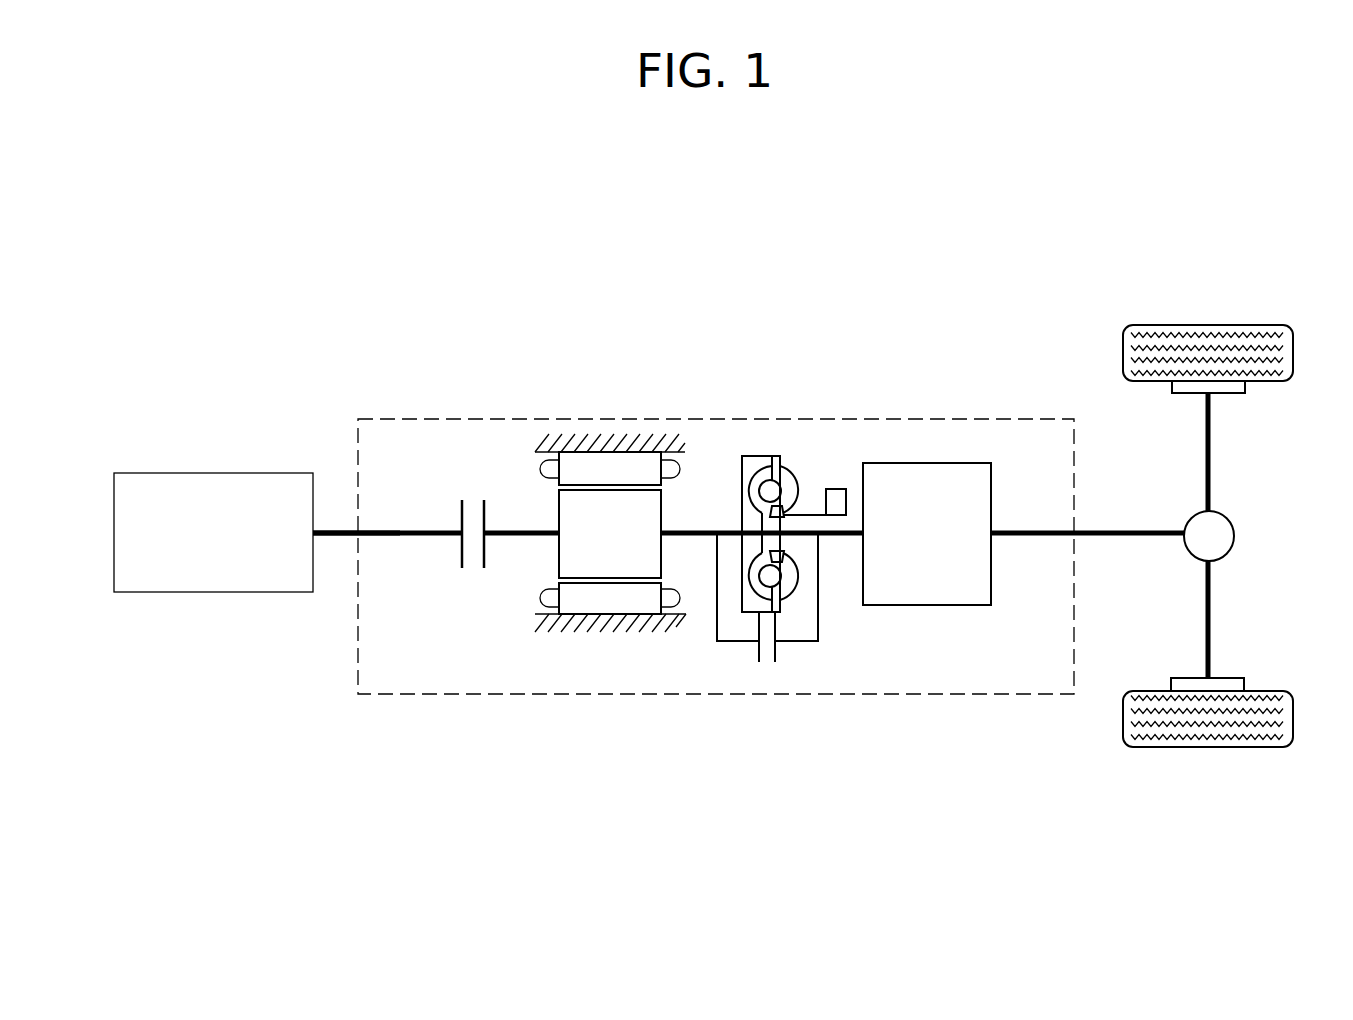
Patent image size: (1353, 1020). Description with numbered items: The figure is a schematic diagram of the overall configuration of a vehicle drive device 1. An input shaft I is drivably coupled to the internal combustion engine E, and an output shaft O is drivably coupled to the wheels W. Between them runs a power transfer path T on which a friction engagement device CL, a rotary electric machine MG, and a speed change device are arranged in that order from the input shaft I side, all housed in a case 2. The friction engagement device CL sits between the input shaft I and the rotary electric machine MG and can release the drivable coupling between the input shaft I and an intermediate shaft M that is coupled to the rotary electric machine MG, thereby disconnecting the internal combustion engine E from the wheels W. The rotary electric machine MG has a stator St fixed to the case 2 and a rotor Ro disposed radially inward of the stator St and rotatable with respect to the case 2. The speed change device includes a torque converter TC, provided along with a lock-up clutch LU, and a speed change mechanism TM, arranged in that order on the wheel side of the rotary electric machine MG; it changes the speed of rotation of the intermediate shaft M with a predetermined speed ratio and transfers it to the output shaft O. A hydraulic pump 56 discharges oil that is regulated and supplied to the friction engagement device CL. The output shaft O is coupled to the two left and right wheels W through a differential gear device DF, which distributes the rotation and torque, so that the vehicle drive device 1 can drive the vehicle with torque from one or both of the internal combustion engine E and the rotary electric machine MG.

The vehicle drive device 1 is at (427, 417).
The internal combustion engine E is at (208, 473).
The input shaft I is at (383, 531).
The power transfer path T is at (342, 528).
The friction engagement device CL is at (460, 562).
The rotary electric machine MG is at (582, 465).
The case 2 is at (578, 446).
The stator St is at (572, 469).
The rotor Ro is at (566, 554).
The intermediate shaft M is at (700, 530).
The torque converter TC is at (768, 442).
The hydraulic pump 56 is at (842, 488).
The speed change mechanism TM is at (930, 462).
The lock-up clutch LU is at (778, 657).
The output shaft O is at (1092, 531).
The differential gear device DF is at (1192, 525).
The wheels W is at (1198, 335).